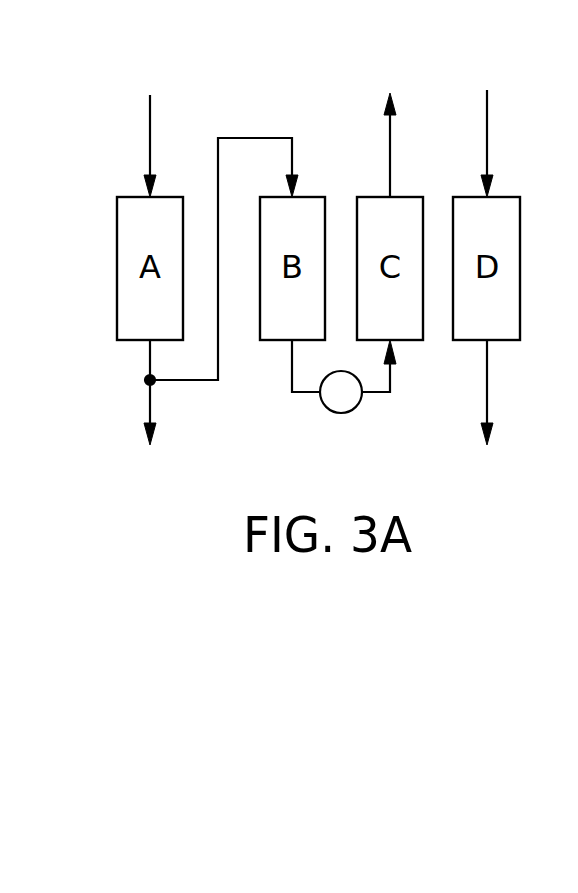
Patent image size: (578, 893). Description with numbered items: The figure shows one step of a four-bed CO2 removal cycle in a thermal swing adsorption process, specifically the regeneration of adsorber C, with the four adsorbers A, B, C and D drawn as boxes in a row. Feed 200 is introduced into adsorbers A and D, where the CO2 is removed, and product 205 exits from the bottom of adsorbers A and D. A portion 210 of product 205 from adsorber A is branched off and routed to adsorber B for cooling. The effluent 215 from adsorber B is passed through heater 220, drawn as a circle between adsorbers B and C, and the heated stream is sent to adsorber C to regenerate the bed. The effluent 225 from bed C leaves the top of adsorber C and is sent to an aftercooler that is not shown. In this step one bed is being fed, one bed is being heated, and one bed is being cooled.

The feed 200 is at (150, 102).
The product 205 is at (150, 407).
The portion of product 210 is at (202, 382).
The effluent from adsorber B 215 is at (292, 387).
The heater 220 is at (341, 413).
The effluent from bed C 225 is at (388, 122).